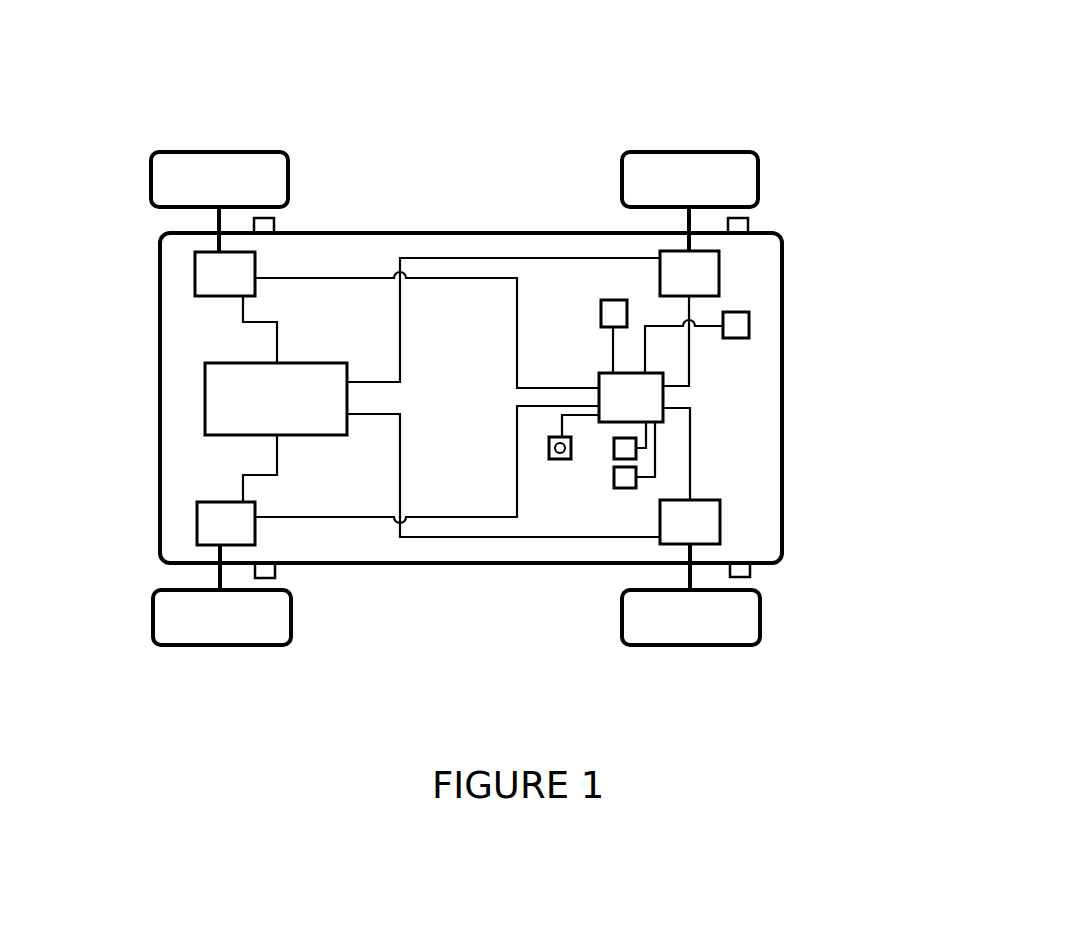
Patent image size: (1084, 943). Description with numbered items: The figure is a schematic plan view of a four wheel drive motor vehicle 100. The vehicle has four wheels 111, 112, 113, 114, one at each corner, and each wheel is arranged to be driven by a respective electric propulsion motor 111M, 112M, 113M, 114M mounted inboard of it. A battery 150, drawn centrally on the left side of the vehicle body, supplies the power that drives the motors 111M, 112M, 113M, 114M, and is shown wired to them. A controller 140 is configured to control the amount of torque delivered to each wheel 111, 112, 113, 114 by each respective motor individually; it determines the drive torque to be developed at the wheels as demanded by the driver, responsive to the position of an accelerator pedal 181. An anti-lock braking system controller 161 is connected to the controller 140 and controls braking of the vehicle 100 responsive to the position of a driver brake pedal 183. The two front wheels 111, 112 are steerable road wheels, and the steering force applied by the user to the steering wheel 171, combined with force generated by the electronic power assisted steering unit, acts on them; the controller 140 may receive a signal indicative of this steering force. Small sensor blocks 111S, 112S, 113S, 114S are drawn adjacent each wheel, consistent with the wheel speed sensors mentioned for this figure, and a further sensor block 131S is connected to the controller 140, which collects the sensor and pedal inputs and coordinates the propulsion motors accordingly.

The four wheel drive motor vehicle 100 is at (994, 97).
The wheel 111 is at (738, 160).
The wheel 112 is at (738, 632).
The wheel 113 is at (178, 160).
The wheel 114 is at (182, 633).
The wheel speed sensor 111S is at (748, 223).
The wheel speed sensor 112S is at (747, 568).
The wheel speed sensor 113S is at (265, 225).
The wheel speed sensor 114S is at (268, 572).
The electric propulsion motor 111M is at (712, 268).
The electric propulsion motor 112M is at (713, 528).
The electric propulsion motor 113M is at (205, 272).
The electric propulsion motor 114M is at (205, 525).
The steering angle sensor 131S is at (745, 324).
The controller 140 is at (655, 397).
The battery 150 is at (213, 384).
The anti-lock braking system (ABS) controller 161 is at (607, 303).
The steering wheel 171 is at (557, 464).
The accelerator pedal 181 is at (627, 483).
The driver brake pedal 183 is at (617, 450).